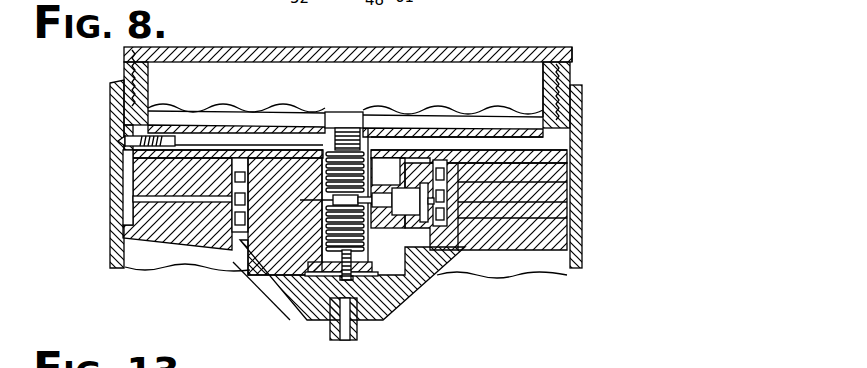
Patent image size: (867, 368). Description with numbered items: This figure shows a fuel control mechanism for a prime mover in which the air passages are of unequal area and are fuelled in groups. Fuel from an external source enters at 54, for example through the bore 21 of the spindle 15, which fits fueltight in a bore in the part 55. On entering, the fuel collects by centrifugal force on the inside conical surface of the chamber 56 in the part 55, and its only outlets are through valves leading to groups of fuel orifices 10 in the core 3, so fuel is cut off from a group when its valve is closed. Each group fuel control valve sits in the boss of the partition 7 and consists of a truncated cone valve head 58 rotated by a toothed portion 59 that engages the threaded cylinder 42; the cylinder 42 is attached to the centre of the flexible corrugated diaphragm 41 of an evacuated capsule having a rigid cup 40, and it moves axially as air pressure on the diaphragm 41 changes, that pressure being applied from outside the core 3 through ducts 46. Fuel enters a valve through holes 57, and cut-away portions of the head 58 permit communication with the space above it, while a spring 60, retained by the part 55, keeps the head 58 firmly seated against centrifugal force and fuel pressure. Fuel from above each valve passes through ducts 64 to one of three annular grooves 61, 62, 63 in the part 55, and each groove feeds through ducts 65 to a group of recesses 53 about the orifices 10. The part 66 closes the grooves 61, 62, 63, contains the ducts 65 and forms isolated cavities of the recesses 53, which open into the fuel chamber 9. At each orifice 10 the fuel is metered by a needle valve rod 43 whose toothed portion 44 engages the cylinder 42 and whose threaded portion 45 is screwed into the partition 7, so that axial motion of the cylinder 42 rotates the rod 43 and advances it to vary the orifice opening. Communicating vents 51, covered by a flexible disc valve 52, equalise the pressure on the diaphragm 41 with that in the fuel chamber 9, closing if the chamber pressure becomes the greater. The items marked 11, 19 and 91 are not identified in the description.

The core 3 is at (110, 115).
The partition 7 is at (573, 57).
The fuel chamber 9 is at (203, 190).
The orifice 10 is at (118, 141).
The passage 11 is at (390, 173).
The spindle 15 is at (352, 340).
The slider column 19 is at (445, 205).
The bore of spindle 21 is at (343, 341).
The rigid cup 40 is at (490, 48).
The flexible corrugated diaphragm 41 is at (420, 116).
The threaded cylinder 42 is at (348, 123).
The needle valve rod 43 is at (245, 146).
The toothed portion 44 is at (345, 141).
The threaded portion 45 is at (191, 122).
The duct 46 is at (493, 147).
The communicating vent 51 is at (374, 318).
The flexible disc valve 52 is at (312, 318).
The recess 53 is at (128, 187).
The fuel inlet 54 is at (318, 330).
The part containing chamber 55 is at (268, 292).
The chamber 56 is at (250, 272).
The hole 57 is at (445, 255).
The group fuel control valve head 58 is at (393, 230).
The toothed portion 59 is at (287, 297).
The spring 60 is at (398, 190).
The annular groove 61 is at (582, 183).
The annular groove 62 is at (582, 202).
The annular groove 63 is at (582, 219).
The duct 64 is at (433, 183).
The duct 65 is at (182, 202).
The closing part 66 is at (156, 246).
The slider column 91 is at (240, 195).